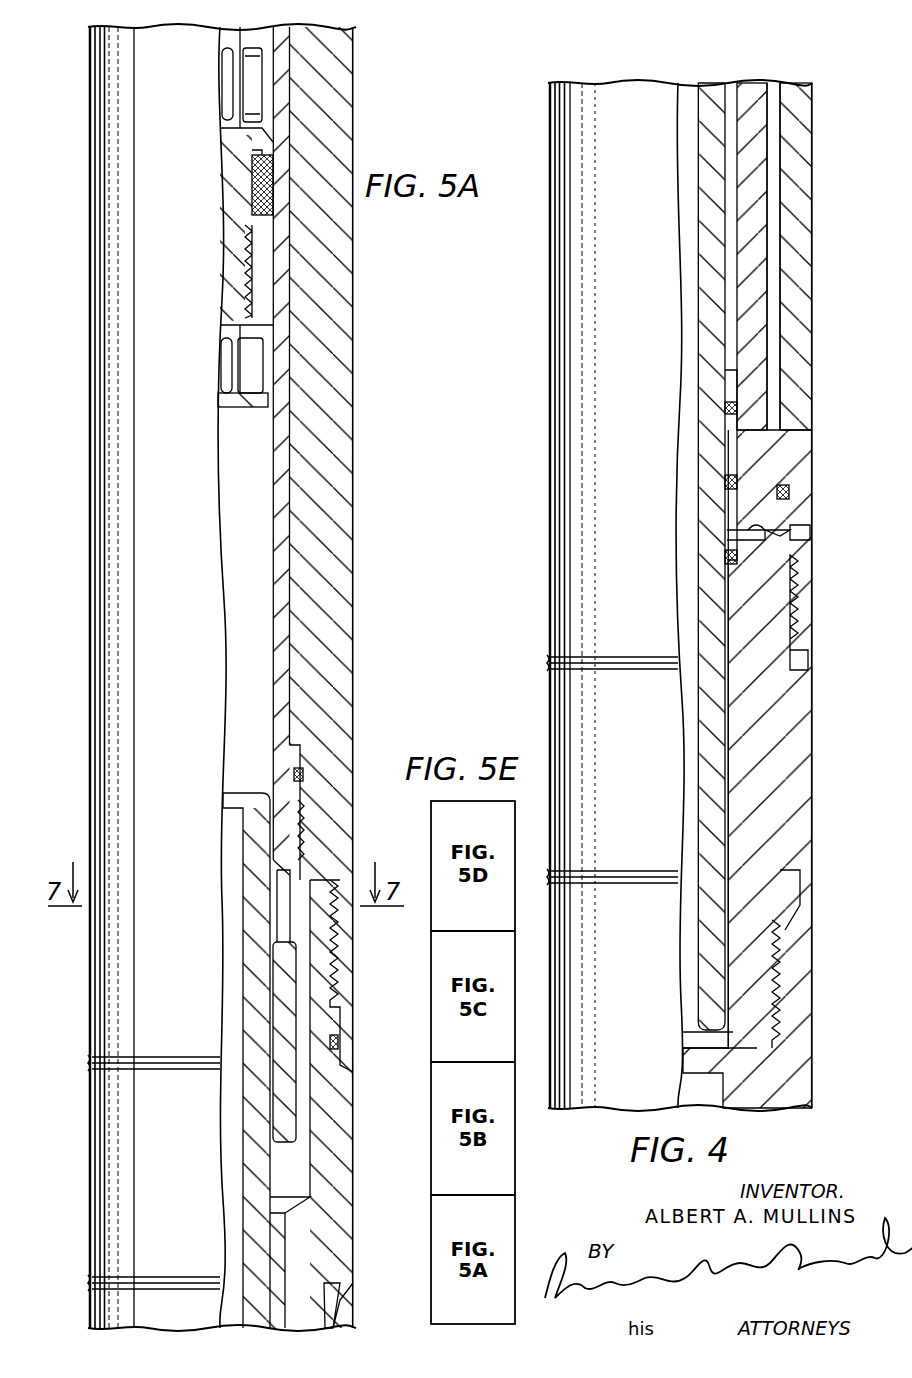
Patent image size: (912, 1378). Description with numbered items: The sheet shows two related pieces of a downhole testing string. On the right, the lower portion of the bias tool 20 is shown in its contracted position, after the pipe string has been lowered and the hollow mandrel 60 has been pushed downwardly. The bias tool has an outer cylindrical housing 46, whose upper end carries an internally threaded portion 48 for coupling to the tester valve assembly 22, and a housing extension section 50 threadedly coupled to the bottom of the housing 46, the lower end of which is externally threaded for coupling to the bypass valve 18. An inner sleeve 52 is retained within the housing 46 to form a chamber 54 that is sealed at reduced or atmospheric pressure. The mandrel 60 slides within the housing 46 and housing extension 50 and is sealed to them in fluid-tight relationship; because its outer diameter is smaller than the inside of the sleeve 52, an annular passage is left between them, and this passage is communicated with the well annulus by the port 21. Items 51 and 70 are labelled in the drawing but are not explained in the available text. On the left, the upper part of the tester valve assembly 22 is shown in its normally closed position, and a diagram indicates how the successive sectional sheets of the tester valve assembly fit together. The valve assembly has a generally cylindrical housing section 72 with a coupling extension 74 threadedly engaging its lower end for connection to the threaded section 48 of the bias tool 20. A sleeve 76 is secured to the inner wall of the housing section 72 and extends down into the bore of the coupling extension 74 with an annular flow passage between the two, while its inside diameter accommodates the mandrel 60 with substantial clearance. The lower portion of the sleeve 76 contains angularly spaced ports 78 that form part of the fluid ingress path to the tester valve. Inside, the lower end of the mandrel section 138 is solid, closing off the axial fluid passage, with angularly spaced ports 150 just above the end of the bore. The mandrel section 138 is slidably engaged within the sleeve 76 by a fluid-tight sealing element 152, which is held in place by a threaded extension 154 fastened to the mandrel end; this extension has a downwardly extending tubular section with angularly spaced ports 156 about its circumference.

In FIG. 4, the bypass valve 18 is at (592, 1106).
In FIG. 5A, the bias tool 20 is at (86, 1306).
In FIG. 4, the bias tool 20 is at (548, 542).
In FIG. 4, the port 21 is at (810, 530).
In FIG. 5A, the tester valve assembly 22 is at (86, 640).
In FIG. 4, the outer cylindrical housing 46 is at (797, 232).
In FIG. 5A, the internally threaded portion 48 is at (347, 1307).
In FIG. 4, the housing extension section 50 is at (798, 773).
In FIG. 4, the retaining ring 51 is at (767, 535).
In FIG. 4, the inner sleeve 52 is at (753, 400).
In FIG. 4, the chamber 54 is at (775, 92).
In FIG. 5A, the hollow mandrel 60 is at (260, 1163).
In FIG. 4, the hollow mandrel 60 is at (708, 92).
In FIG. 4, the seal ring 70 is at (737, 500).
In FIG. 5A, the housing section 72 is at (337, 470).
In FIG. 5A, the coupling extension 74 is at (338, 1093).
In FIG. 5A, the sleeve 76 is at (283, 607).
In FIG. 5A, the ports 78 is at (283, 915).
In FIG. 5A, the mandrel section 138 is at (253, 135).
In FIG. 5A, the ports 150 is at (250, 92).
In FIG. 5A, the fluid-tight sealing element 152 is at (273, 205).
In FIG. 5A, the threaded extension 154 is at (262, 280).
In FIG. 5A, the ports 156 is at (257, 367).